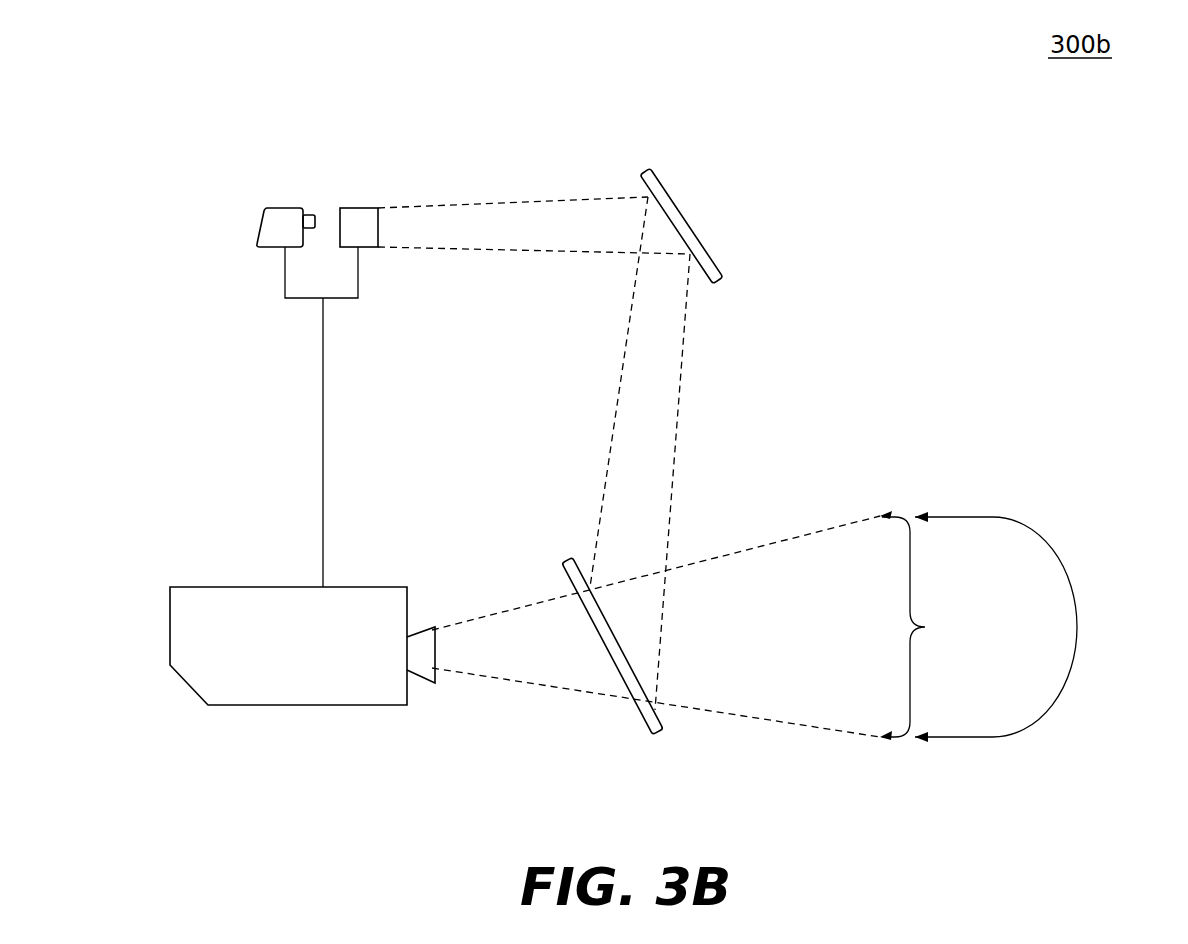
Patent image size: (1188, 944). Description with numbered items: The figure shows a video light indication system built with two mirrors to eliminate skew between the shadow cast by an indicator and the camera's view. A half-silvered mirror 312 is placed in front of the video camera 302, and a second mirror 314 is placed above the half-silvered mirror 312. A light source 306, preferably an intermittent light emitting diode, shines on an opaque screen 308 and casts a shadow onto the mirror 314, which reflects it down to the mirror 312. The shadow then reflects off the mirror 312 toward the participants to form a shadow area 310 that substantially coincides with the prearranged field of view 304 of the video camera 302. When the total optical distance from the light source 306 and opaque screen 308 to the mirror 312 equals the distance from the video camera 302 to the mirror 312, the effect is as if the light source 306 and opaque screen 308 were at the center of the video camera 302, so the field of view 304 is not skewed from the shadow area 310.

The video camera 302 is at (270, 587).
The field of view 304 is at (933, 627).
The light source 306 is at (262, 225).
The opaque screen 308 is at (360, 208).
The shadow area 310 is at (1077, 635).
The half-silvered mirror 312 is at (643, 720).
The second mirror 314 is at (670, 192).